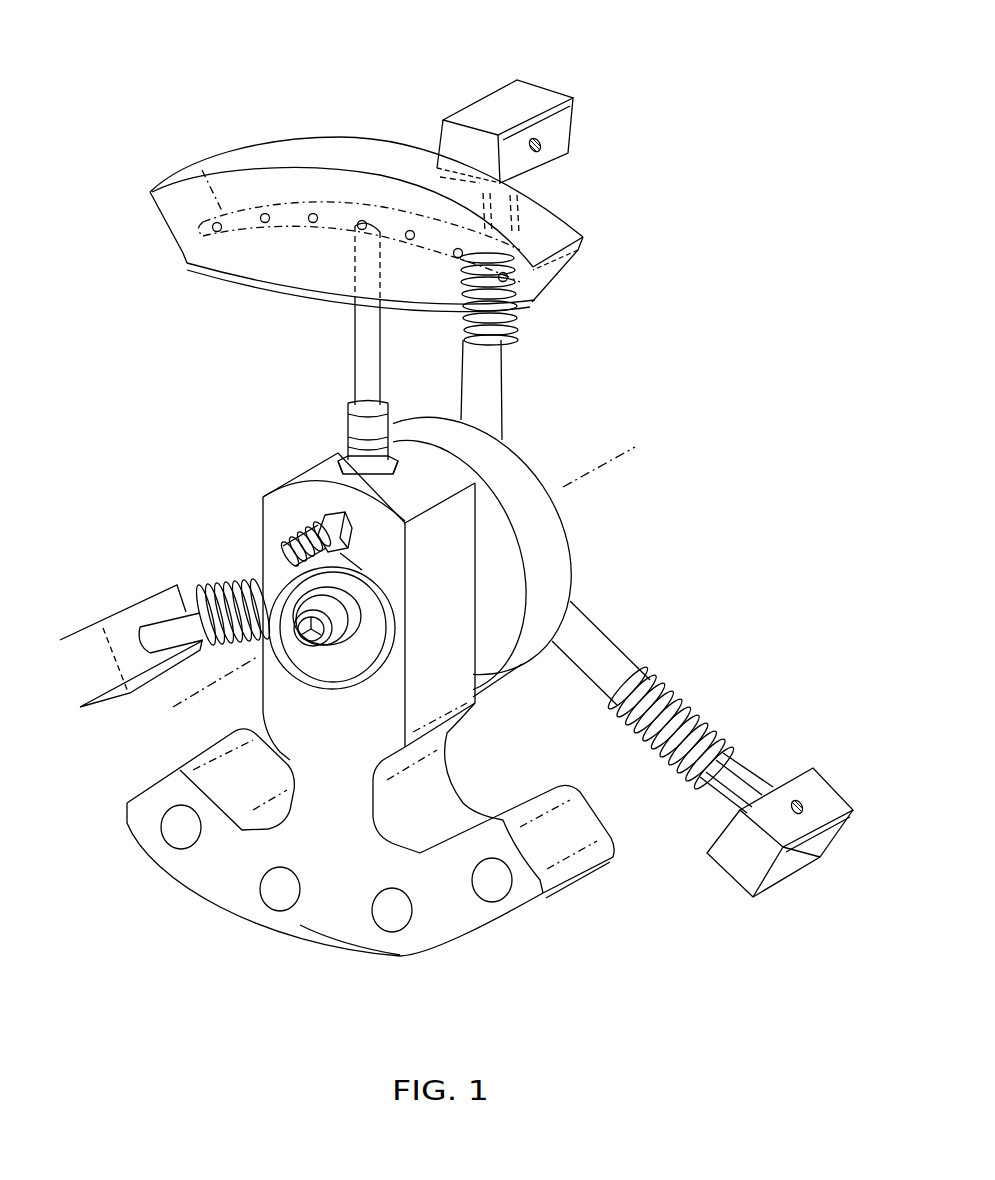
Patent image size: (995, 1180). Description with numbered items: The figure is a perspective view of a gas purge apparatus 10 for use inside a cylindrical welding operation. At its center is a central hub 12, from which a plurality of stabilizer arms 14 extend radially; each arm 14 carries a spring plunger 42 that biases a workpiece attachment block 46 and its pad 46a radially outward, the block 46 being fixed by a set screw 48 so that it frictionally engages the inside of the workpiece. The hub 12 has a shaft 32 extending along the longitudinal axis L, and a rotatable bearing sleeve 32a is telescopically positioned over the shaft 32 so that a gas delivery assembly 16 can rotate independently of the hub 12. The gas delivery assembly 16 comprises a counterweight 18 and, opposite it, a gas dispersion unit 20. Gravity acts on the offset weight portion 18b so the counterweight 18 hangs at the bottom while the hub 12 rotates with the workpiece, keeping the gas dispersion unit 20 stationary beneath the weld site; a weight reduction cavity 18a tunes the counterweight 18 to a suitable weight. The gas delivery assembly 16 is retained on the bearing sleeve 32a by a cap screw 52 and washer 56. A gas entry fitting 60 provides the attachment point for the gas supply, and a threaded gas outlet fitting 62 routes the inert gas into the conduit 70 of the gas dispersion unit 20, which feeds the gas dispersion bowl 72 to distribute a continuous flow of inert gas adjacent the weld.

The gas purge apparatus 10 is at (640, 367).
The central hub 12 is at (556, 558).
The stabilizer arms 14 is at (492, 385).
The gas delivery assembly 16 is at (470, 735).
The counterweight 18 is at (453, 910).
The cavity 18a is at (183, 825).
The offset weight portion 18b is at (320, 918).
The gas dispersion unit 20 is at (363, 140).
The shaft 32 is at (327, 667).
The bearing sleeve 32a is at (367, 670).
The spring plunger 42 is at (688, 708).
The workpiece attachment block 46 is at (574, 92).
The pad 46a is at (800, 855).
The set screw 48 is at (543, 150).
The cap screw 52 is at (287, 647).
The washer 56 is at (353, 603).
The gas entry fitting 60 is at (298, 533).
The gas outlet fitting 62 is at (360, 430).
The conduit 70 is at (372, 357).
The gas dispersion container or bowl 72 is at (262, 185).